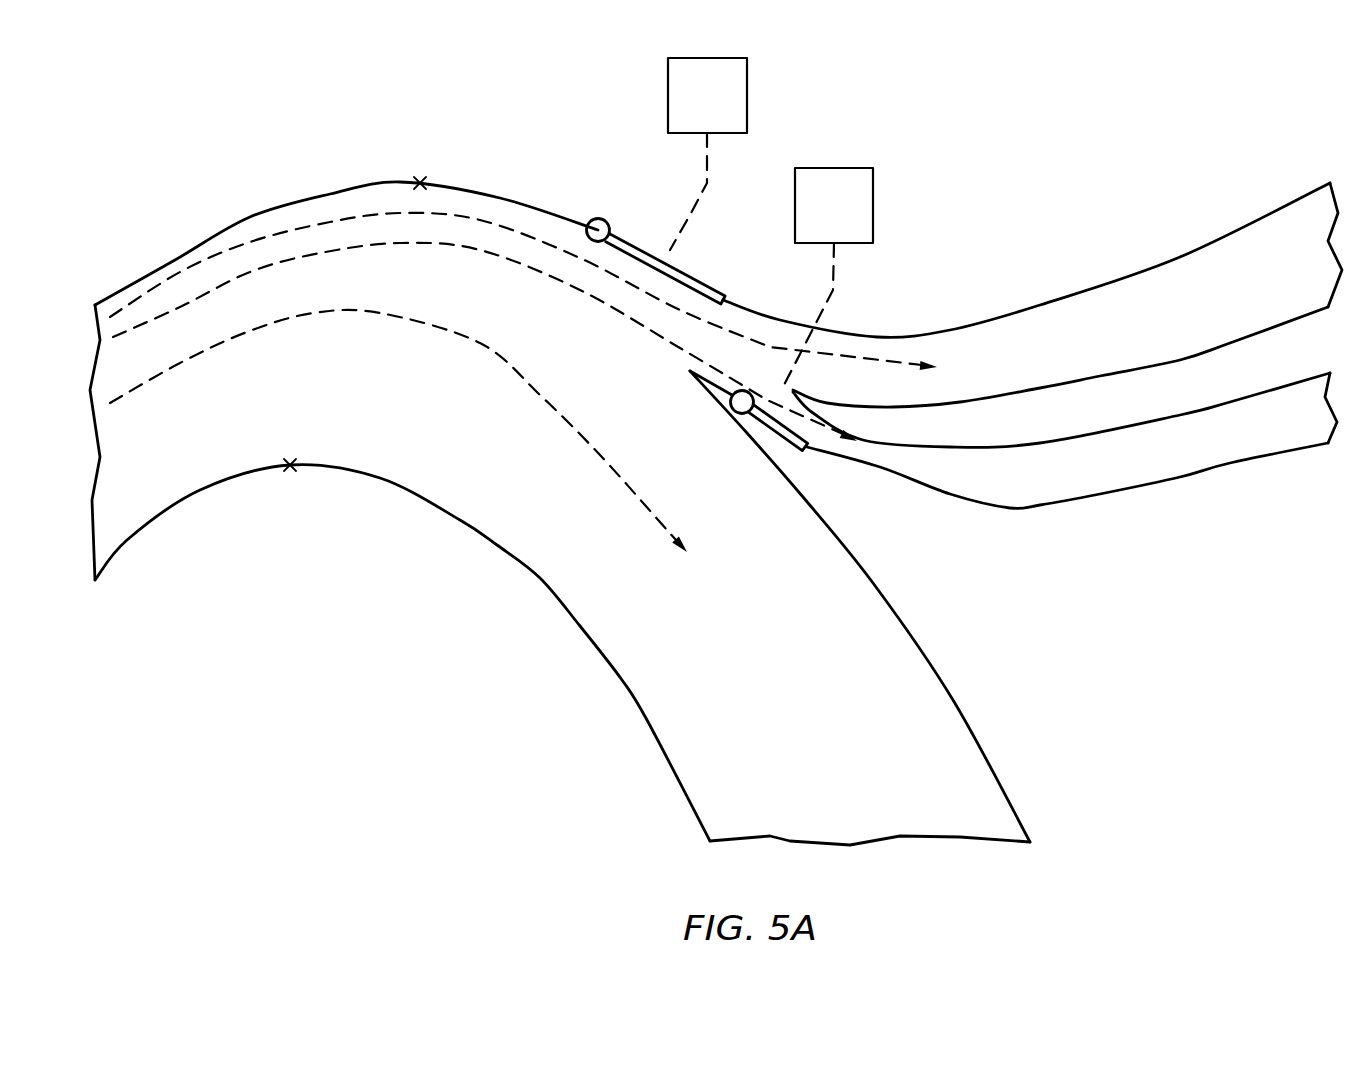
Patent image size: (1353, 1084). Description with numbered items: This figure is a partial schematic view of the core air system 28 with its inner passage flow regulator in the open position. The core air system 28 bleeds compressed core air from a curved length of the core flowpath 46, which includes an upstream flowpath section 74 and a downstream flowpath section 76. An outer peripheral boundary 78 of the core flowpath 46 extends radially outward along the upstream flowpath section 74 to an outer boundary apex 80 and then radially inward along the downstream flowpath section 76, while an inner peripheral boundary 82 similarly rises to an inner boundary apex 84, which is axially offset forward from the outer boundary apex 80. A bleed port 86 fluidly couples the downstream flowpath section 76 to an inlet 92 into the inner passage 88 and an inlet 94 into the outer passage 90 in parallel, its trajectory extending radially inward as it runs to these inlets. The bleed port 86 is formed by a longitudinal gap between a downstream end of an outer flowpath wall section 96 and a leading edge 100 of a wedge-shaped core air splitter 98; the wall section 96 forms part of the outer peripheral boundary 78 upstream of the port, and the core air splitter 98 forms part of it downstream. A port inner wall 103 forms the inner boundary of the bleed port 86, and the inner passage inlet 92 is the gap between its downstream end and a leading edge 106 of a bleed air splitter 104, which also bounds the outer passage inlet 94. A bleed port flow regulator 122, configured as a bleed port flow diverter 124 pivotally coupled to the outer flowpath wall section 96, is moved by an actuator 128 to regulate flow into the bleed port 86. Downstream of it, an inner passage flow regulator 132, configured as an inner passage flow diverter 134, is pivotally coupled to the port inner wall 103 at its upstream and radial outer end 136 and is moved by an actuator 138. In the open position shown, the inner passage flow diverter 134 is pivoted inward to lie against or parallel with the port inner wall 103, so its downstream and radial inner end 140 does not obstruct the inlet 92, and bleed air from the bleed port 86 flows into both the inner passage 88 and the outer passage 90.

The core air system 28 is at (965, 165).
The core flowpath 46 is at (782, 716).
The upstream flowpath section 74 is at (182, 520).
The downstream flowpath section 76 is at (490, 566).
The outer peripheral boundary 78 is at (168, 267).
The outer boundary apex 80 is at (420, 180).
The inner peripheral boundary 82 is at (112, 552).
The inner boundary apex 84 is at (290, 460).
The bleed port 86 is at (766, 345).
The inner passage 88 is at (1230, 446).
The outer passage 90 is at (1222, 296).
The inlet into the inner passage 92 is at (793, 390).
The inlet into the outer passage 94 is at (793, 390).
The outer flowpath wall section 96 is at (481, 193).
The core air splitter 98 is at (690, 403).
The leading edge of the core air splitter 100 is at (688, 372).
The port inner wall 103 is at (719, 385).
The bleed air splitter 104 is at (832, 395).
The leading edge of the bleed air splitter 106 is at (795, 389).
The bleed port flow regulator 122 is at (646, 232).
The bleed port flow diverter 124 is at (688, 270).
The actuator 128 is at (690, 109).
The inner passage flow regulator 132 is at (762, 452).
The inner passage flow diverter 134 is at (782, 440).
The upstream and radial outer end 136 is at (736, 413).
The actuator 138 is at (817, 219).
The downstream and radial inner end 140 is at (803, 450).